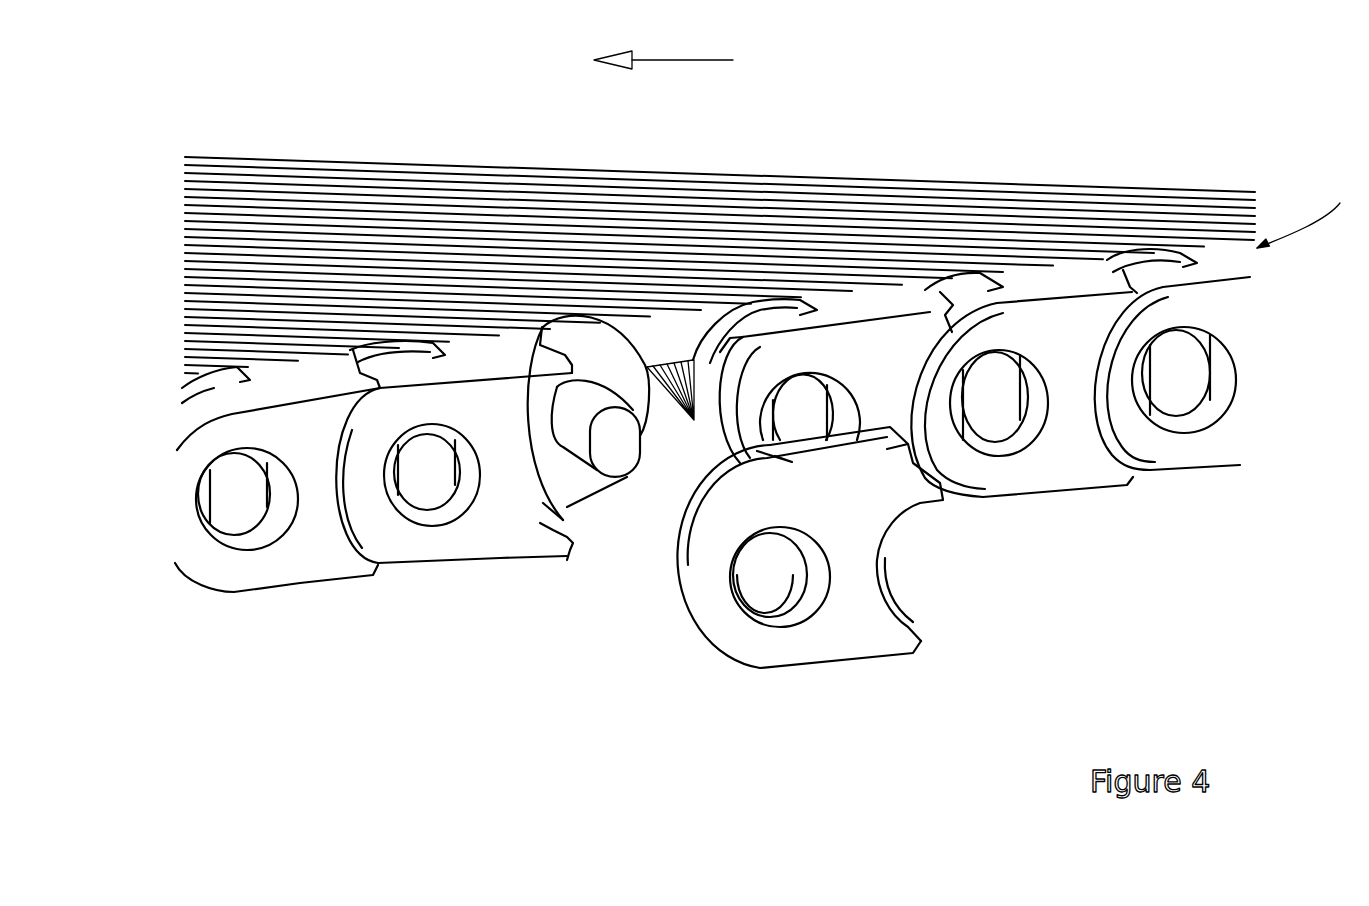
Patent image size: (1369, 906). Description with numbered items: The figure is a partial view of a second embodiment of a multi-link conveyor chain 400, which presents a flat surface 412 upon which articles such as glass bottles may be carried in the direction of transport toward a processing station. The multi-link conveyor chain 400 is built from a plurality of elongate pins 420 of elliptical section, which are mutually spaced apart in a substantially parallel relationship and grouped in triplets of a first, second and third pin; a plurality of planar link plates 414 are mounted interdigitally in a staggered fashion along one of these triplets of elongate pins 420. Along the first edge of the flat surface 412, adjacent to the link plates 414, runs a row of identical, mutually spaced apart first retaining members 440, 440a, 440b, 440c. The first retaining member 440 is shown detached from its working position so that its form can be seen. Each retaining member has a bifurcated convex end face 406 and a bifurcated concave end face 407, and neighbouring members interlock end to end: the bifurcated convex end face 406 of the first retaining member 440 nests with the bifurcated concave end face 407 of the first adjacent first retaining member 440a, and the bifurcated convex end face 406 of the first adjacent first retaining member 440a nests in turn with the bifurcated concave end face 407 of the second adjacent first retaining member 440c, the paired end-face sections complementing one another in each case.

The multi-link conveyor chain 400 is at (958, 167).
The flat surface 412 is at (550, 200).
The link plates 414 is at (188, 310).
The bifurcated convex end face 406 is at (687, 560).
The bifurcated concave end face 407 is at (545, 560).
The elongate pins 420 is at (622, 480).
The first retaining member 440 is at (835, 640).
The first adjacent first retaining member 440a is at (460, 567).
The first retaining member 440b is at (930, 508).
The second adjacent first retaining member 440c is at (300, 592).